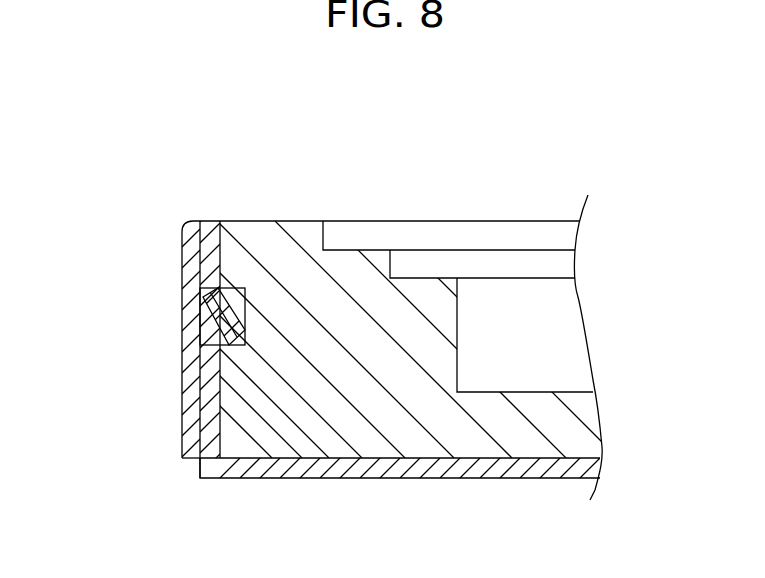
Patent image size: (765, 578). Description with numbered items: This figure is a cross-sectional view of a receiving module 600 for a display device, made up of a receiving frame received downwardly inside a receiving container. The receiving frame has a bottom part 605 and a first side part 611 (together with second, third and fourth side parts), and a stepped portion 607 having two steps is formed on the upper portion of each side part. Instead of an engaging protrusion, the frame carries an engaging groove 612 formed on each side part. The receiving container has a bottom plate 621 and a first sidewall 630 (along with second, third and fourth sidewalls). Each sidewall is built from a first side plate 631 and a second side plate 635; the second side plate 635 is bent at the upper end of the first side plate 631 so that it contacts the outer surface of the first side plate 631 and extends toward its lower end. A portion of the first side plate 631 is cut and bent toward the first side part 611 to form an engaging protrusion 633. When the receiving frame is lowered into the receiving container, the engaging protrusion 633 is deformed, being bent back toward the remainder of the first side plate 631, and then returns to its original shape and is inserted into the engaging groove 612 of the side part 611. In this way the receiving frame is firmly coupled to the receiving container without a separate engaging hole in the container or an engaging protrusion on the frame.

The receiving module 600 is at (355, 111).
The bottom part 605 is at (538, 433).
The stepped portion 607 is at (420, 278).
The first side part 611 is at (333, 327).
The engaging groove 612 is at (222, 293).
The bottom plate 621 is at (449, 475).
The first sidewall 630 is at (85, 382).
The first side plate 631 is at (212, 440).
The engaging protrusion 633 is at (243, 300).
The second side plate 635 is at (190, 393).